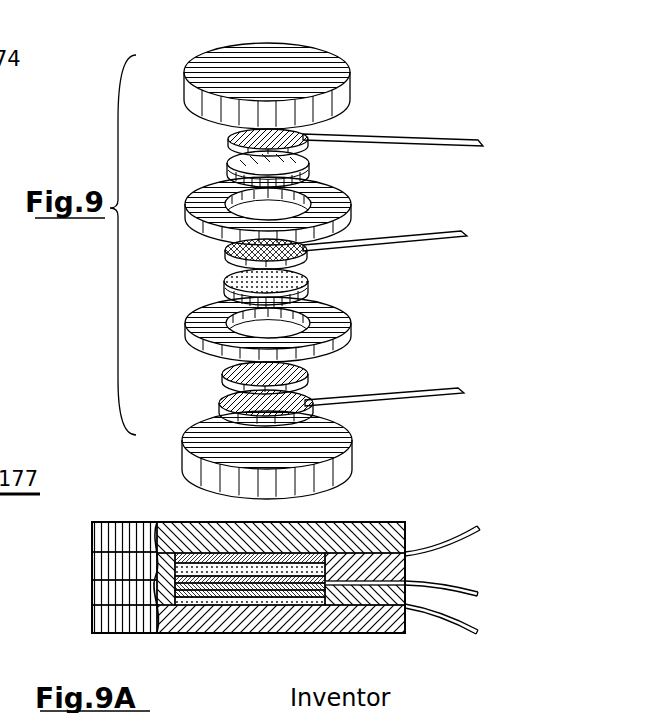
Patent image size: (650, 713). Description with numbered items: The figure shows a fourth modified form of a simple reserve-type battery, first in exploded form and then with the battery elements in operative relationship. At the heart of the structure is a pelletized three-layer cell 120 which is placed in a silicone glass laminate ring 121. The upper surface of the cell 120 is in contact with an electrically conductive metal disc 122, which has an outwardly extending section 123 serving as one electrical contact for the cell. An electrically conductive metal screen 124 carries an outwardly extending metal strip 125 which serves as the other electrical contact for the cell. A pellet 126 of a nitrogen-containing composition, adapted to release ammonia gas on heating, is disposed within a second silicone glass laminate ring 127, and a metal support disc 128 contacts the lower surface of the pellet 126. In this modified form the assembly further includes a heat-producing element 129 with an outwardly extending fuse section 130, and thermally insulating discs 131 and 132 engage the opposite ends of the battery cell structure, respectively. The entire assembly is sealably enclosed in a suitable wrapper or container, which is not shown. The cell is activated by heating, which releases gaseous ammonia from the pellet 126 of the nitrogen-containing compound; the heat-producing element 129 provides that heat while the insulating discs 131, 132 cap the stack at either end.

In FIG. 9, the pelletized three-layer cell 120 is at (309, 166).
In FIG. 9A, the pelletized three-layer cell 120 is at (288, 563).
In FIG. 9, the silicone glass laminate ring 121 is at (218, 198).
In FIG. 9A, the silicone glass laminate ring 121 is at (118, 570).
In FIG. 9, the electrically conductive metal disc 122 is at (228, 135).
In FIG. 9A, the electrically conductive metal disc 122 is at (198, 546).
In FIG. 9, the outwardly extending section 123 is at (378, 137).
In FIG. 9A, the outwardly extending section 123 is at (455, 535).
In FIG. 9, the electrically conductive metal screen 124 is at (228, 250).
In FIG. 9A, the electrically conductive metal screen 124 is at (175, 610).
In FIG. 9, the outwardly extending metal strip 125 is at (404, 234).
In FIG. 9A, the outwardly extending metal strip 125 is at (463, 592).
In FIG. 9, the pellet of nitrogen-containing composition 126 is at (308, 283).
In FIG. 9A, the pellet of nitrogen-containing composition 126 is at (306, 597).
In FIG. 9, the silicone glass laminate ring 127 is at (200, 318).
In FIG. 9A, the silicone glass laminate ring 127 is at (118, 596).
In FIG. 9, the metal support disc 128 is at (318, 372).
In FIG. 9A, the metal support disc 128 is at (276, 600).
In FIG. 9, the heat-producing element 129 is at (232, 405).
In FIG. 9A, the heat-producing element 129 is at (232, 605).
In FIG. 9, the fuse section 130 is at (414, 393).
In FIG. 9A, the fuse section 130 is at (455, 617).
In FIG. 9, the thermally insulating disc 131 is at (300, 452).
In FIG. 9A, the thermally insulating disc 131 is at (210, 612).
In FIG. 9, the thermally insulating disc 132 is at (298, 72).
In FIG. 9A, the thermally insulating disc 132 is at (113, 537).